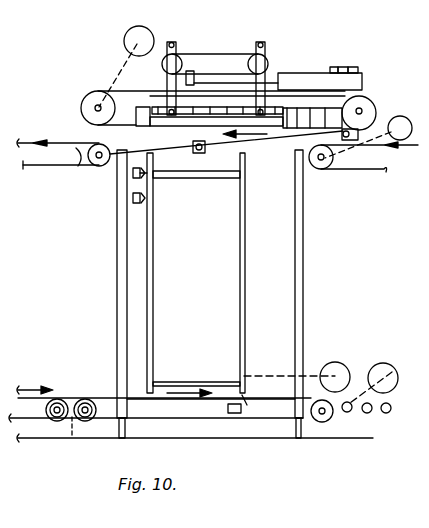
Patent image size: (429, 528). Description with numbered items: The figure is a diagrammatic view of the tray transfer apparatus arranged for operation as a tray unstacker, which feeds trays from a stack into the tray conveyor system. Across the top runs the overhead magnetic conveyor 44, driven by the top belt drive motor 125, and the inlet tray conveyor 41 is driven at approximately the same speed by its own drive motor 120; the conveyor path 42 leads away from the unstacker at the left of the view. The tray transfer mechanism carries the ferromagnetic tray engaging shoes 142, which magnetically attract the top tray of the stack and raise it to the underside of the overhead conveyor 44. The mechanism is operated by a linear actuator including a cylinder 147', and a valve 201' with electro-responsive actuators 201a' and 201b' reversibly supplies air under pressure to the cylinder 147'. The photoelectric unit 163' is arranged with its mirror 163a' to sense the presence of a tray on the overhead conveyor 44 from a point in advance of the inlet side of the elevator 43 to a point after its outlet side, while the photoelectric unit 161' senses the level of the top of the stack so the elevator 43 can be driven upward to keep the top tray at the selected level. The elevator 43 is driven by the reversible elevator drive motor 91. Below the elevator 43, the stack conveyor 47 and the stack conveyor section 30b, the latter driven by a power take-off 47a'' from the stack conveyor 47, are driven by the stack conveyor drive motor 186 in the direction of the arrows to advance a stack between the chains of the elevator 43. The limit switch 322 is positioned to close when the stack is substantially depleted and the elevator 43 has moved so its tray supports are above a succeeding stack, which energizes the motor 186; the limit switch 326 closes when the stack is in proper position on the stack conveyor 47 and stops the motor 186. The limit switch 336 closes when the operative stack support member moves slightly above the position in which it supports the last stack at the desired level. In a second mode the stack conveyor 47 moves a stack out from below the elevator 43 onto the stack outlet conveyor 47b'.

The top belt drive motor 125 is at (138, 26).
The overhead magnetic conveyor 44 is at (128, 92).
The web 42 is at (59, 139).
The mirror 163a' is at (62, 169).
The cylinder 147' is at (262, 75).
The electro-responsive actuator 201a' is at (324, 41).
The valve 201' is at (365, 41).
The electro-responsive actuator 201b' is at (385, 52).
The photoelectric unit 163' is at (379, 96).
The drive motor 120 is at (400, 124).
The inlet tray conveyor 41 is at (369, 153).
The tray engaging shoe 142 is at (167, 127).
The photoelectric unit 161' is at (197, 170).
The elevator 43 is at (252, 262).
The limit switch 336 is at (132, 174).
The limit switch 322 is at (132, 199).
The stack conveyor section 30b is at (58, 398).
The stack conveyor 47 is at (102, 388).
The nip 47a'' is at (50, 439).
The limit switch 326 is at (241, 407).
The elevator drive motor 91 is at (347, 344).
The stack conveyor drive motor 186 is at (383, 370).
The stack outlet conveyor 47b' is at (361, 421).